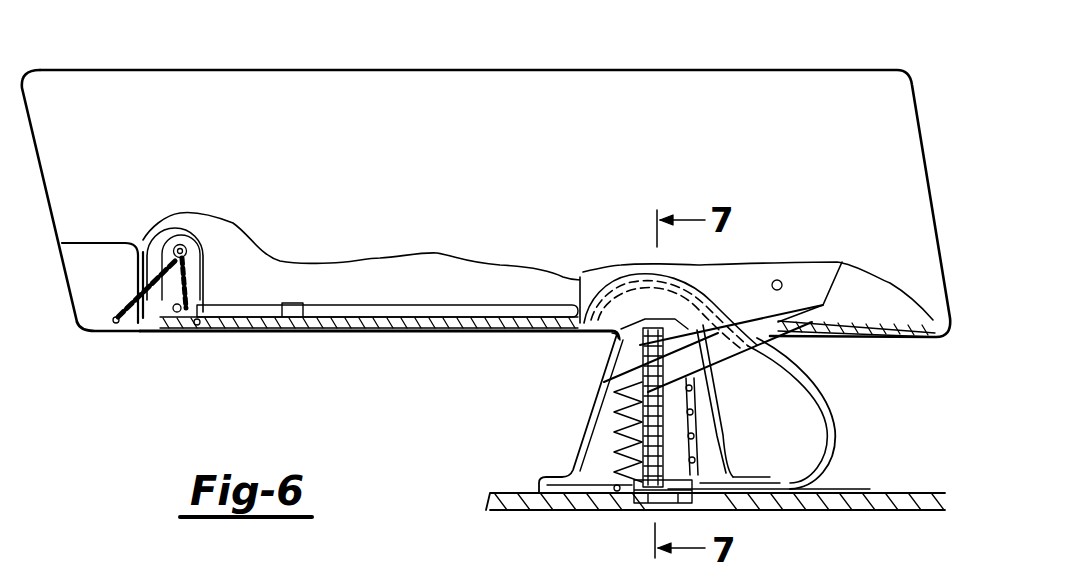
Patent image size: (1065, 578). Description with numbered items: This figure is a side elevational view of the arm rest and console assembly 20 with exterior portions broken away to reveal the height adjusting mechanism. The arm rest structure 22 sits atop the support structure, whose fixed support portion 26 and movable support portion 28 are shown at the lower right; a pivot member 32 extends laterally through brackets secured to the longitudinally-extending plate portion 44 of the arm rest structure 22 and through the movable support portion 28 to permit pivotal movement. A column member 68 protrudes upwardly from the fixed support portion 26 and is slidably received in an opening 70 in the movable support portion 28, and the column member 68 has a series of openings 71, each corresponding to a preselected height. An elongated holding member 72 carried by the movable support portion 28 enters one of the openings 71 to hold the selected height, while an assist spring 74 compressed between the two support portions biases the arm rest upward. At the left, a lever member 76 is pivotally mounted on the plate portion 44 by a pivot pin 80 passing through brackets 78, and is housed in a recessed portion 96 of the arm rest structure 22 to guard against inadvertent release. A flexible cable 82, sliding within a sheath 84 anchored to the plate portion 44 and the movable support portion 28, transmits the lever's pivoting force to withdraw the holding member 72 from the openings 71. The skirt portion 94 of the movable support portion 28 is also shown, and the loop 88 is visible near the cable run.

The arm rest and console assembly 20 is at (825, 17).
The arm rest structure 22 is at (432, 103).
The fixed support portion 26 is at (912, 490).
The movable support portion 28 is at (594, 410).
The pivot member 32 is at (782, 280).
The plate portion 44 is at (440, 322).
The column member 68 is at (718, 332).
The opening 70 is at (645, 350).
The openings 71 is at (650, 368).
The elongated holding member 72 is at (647, 500).
The assist spring 74 is at (617, 457).
The lever member 76 is at (118, 332).
The bracket 78 is at (195, 268).
The pivot pin 80 is at (183, 250).
The flexible cable 82 is at (197, 323).
The sheath 84 is at (380, 312).
The strap loop 88 is at (826, 450).
The skirt portion 94 is at (537, 480).
The recessed portion 96 is at (90, 302).